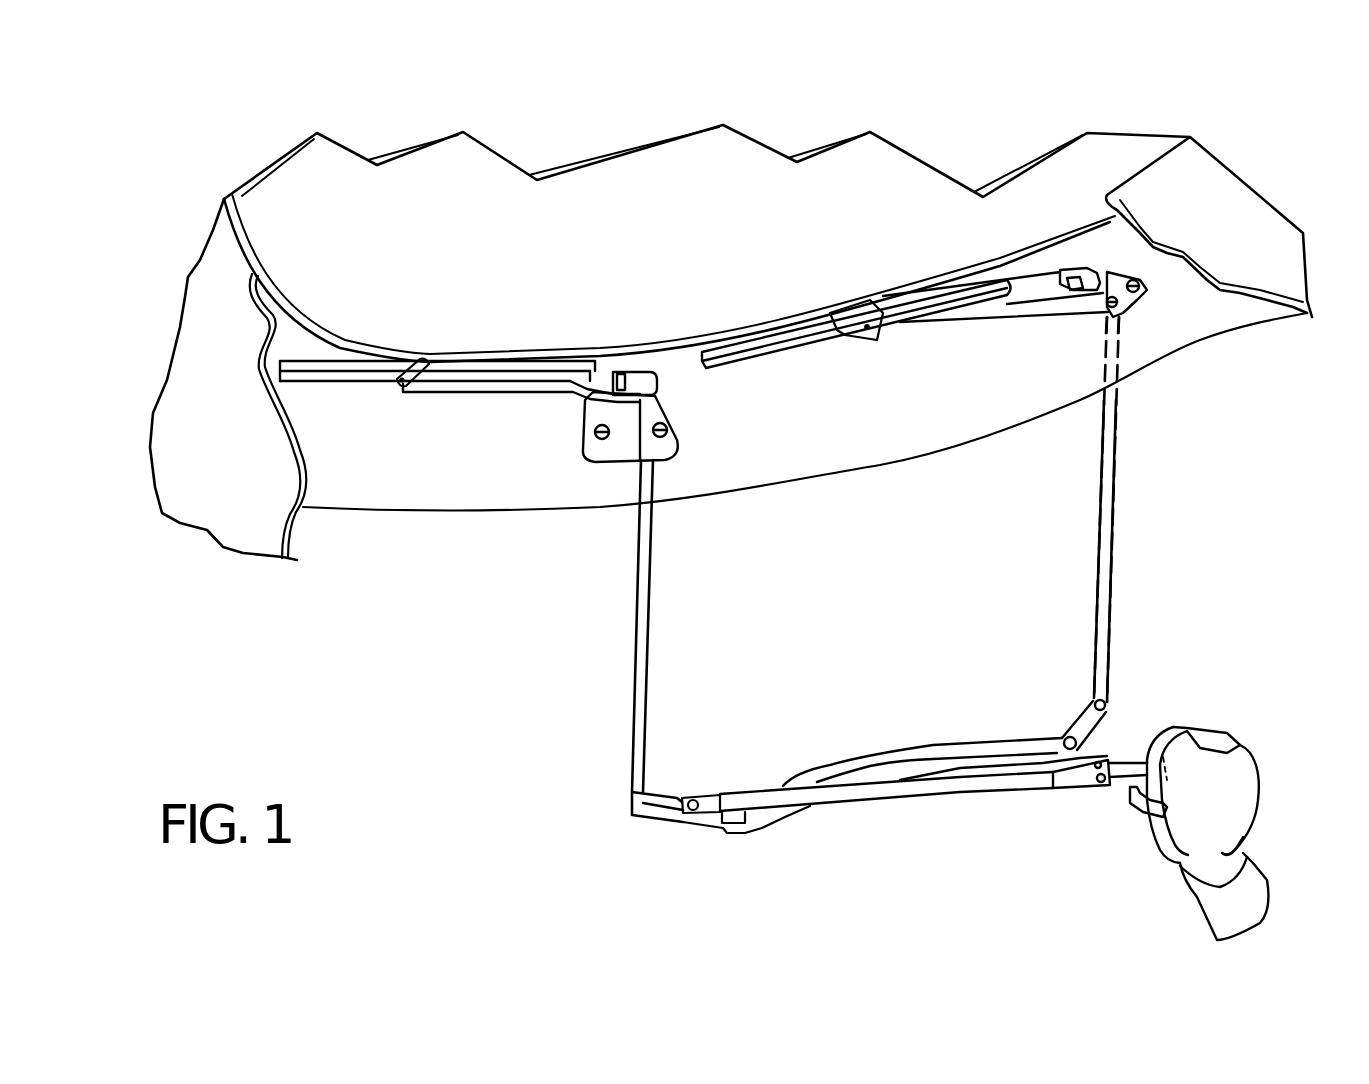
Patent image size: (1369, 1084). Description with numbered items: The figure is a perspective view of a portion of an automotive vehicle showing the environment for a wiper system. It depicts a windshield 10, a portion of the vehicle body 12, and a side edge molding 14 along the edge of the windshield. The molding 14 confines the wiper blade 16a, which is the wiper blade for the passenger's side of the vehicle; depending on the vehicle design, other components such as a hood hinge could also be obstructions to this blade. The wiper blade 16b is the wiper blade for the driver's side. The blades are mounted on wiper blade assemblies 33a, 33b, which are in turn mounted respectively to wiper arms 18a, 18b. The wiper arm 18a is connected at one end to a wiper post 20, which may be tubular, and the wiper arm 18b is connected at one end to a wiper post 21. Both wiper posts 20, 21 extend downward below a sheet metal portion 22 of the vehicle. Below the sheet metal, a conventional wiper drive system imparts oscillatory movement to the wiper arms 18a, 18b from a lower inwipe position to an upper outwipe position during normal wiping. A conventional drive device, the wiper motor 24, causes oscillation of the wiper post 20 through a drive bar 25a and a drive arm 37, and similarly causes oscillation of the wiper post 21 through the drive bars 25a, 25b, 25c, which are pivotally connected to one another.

The windshield 10 is at (592, 198).
The vehicle body 12 is at (237, 230).
The side edge molding 14 is at (278, 387).
The wiper blade 16a is at (350, 366).
The wiper blade 16b is at (770, 333).
The wiper arm 18a is at (520, 384).
The wiper arm 18b is at (930, 318).
The wiper post 20 is at (646, 684).
The wiper post 21 is at (1113, 603).
The sheet metal portion 22 is at (430, 500).
The wiper motor 24 is at (1253, 783).
The drive bar 25a is at (873, 803).
The drive bar 25b is at (943, 755).
The drive bar 25c is at (1062, 710).
The wiper blade assembly 33a is at (448, 333).
The wiper blade assembly 33b is at (878, 290).
The drive arm 37 is at (667, 790).